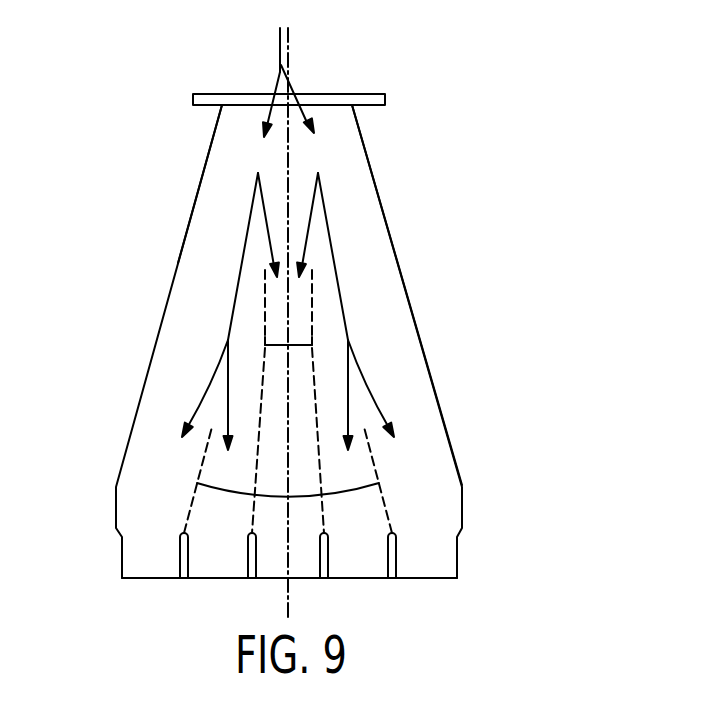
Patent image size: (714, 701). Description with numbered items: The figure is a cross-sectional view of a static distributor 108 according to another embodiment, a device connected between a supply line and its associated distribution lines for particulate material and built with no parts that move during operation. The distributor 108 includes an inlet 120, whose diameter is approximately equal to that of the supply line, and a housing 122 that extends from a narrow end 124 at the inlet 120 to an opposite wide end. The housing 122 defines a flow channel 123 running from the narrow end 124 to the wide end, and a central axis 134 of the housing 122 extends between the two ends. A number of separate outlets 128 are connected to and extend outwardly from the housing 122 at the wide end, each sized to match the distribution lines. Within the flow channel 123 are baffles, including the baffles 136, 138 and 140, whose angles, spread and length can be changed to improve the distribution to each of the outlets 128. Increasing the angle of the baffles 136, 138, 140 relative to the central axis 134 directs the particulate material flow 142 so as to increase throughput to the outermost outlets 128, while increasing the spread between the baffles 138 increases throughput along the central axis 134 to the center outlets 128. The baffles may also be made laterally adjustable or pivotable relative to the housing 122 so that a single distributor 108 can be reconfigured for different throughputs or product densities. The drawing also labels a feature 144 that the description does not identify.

The static distributor 108 is at (484, 348).
The inlet 120 is at (193, 100).
The housing 122 is at (158, 248).
The flow channel 123 is at (202, 213).
The narrow end 124 is at (212, 135).
The outlets 128 is at (223, 570).
The central axis 134 is at (287, 67).
The baffle 136 is at (288, 148).
The baffles 138 is at (265, 307).
The baffle 140 is at (203, 465).
The particulate material flow 142 is at (280, 44).
The flow divider 144 is at (238, 280).